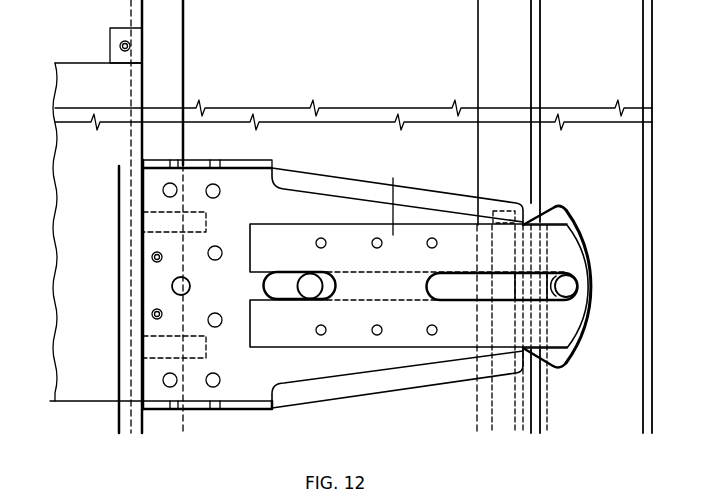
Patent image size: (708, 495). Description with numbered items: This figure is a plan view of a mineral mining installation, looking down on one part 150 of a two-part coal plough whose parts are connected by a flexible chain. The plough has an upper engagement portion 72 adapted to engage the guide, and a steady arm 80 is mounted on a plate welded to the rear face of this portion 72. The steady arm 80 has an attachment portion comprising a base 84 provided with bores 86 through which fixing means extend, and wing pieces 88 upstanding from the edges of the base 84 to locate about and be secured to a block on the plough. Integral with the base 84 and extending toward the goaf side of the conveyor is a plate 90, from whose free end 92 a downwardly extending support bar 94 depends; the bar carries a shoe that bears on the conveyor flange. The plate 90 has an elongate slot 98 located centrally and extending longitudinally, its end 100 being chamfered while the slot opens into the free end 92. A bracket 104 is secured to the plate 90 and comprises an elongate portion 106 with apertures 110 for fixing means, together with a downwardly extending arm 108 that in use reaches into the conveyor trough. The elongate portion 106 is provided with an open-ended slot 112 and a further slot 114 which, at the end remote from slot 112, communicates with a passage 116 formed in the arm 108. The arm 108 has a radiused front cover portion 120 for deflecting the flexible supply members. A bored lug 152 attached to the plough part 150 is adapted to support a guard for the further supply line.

The upper engagement portion 72 is at (73, 77).
The steady arm 80 is at (390, 392).
The base 84 is at (194, 188).
The bores 86 is at (167, 183).
The wing pieces 88 is at (242, 163).
The plate 90 is at (328, 207).
The free end 92 is at (510, 222).
The support bar 94 is at (497, 212).
The elongate slot 98 is at (315, 283).
The end of the slot 100 is at (265, 289).
The bracket 104 is at (420, 224).
The elongate portion 106 is at (393, 193).
The downwardly extending arm 108 is at (575, 222).
The apertures 110 is at (372, 238).
The open-ended slot 112 is at (257, 272).
The further slot 114 is at (446, 272).
The passage 116 is at (568, 290).
The radiused front cover portion 120 is at (588, 332).
The plough part 150 is at (95, 283).
The bored lug 152 is at (118, 43).